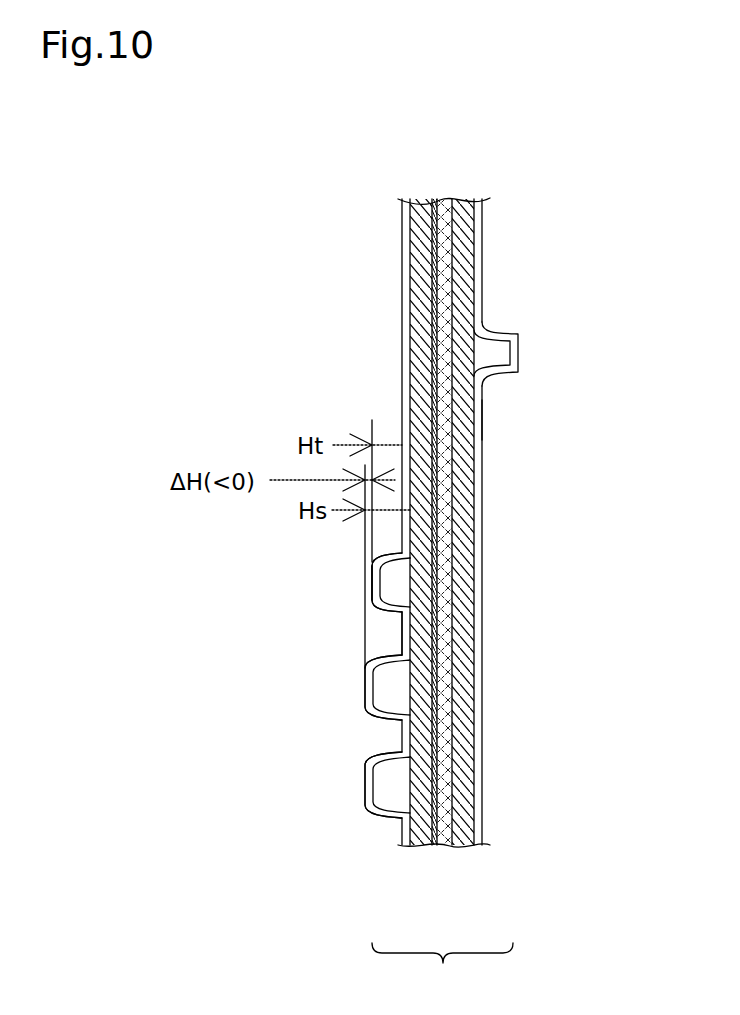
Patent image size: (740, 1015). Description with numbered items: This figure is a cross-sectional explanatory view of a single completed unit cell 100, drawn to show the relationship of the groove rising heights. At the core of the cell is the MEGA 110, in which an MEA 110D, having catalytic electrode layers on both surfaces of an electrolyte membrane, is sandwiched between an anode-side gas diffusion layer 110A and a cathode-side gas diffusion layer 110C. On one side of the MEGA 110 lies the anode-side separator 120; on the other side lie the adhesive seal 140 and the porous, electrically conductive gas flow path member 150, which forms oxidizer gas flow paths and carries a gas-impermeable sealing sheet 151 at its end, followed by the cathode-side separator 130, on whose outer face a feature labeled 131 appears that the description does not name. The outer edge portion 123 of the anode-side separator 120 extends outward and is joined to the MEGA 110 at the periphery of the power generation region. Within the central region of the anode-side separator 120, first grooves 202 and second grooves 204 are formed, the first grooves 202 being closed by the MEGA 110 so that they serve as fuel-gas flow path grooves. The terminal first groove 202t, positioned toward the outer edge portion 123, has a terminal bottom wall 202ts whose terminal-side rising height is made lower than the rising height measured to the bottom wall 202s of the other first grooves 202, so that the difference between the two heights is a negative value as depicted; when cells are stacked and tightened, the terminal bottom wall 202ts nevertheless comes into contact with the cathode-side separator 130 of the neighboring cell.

The unit cell 100 is at (318, 182).
The MEGA 110 is at (442, 972).
The anode-side gas diffusion layer 110A is at (415, 847).
The cathode-side gas diffusion layer 110C is at (460, 847).
The MEA 110D is at (438, 847).
The anode-side separator 120 is at (386, 814).
The outer edge portion 123 is at (402, 310).
The cathode-side separator 130 is at (463, 727).
The protrusion of second electrode 131 is at (518, 350).
The adhesive seal 140 is at (410, 271).
The gas flow path member 150 is at (485, 798).
The sealing sheet 151 is at (481, 418).
The first groove 202 is at (395, 790).
The bottom wall 202s is at (365, 690).
The terminal first groove 202t is at (390, 575).
The terminal bottom wall 202ts is at (372, 597).
The second groove 204 is at (393, 638).